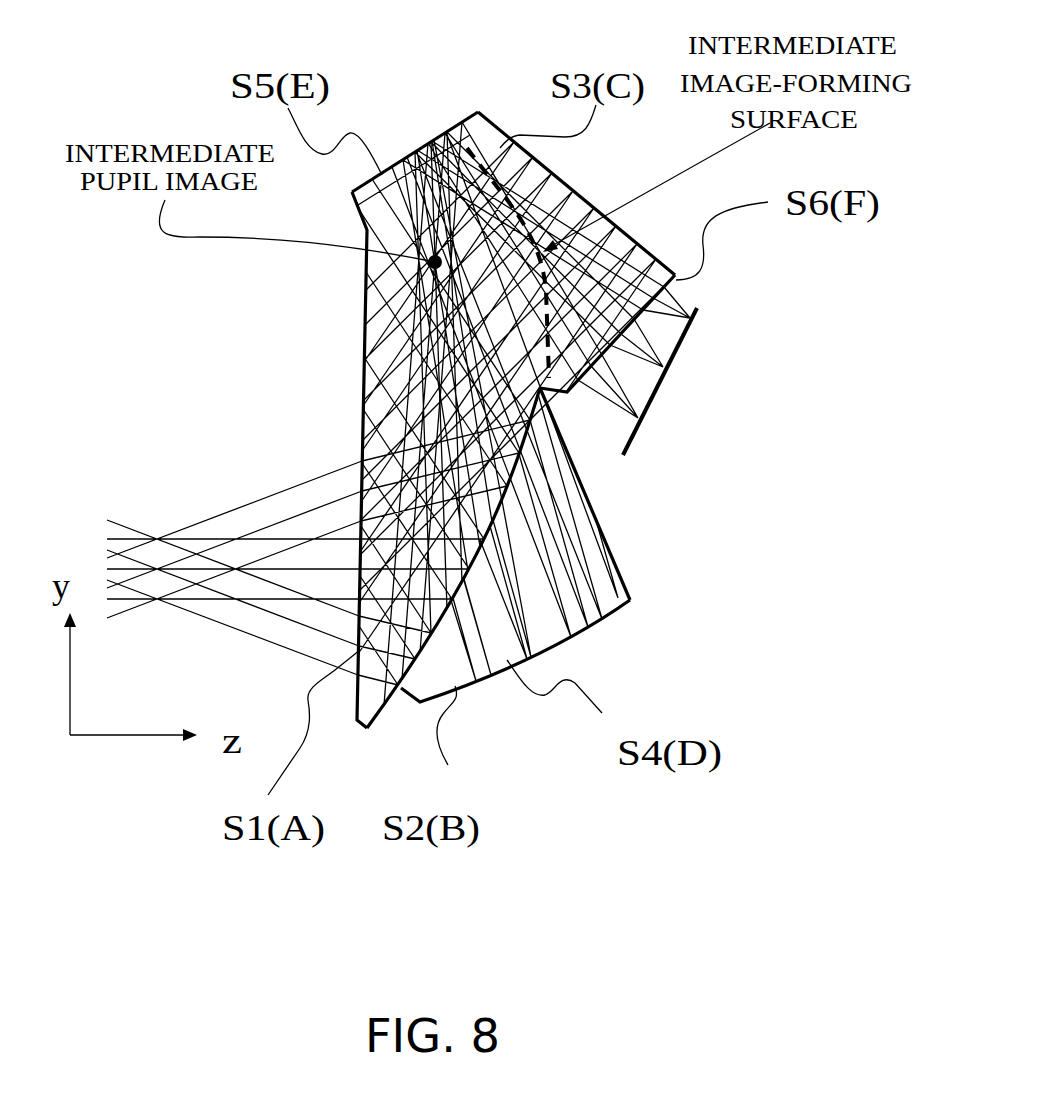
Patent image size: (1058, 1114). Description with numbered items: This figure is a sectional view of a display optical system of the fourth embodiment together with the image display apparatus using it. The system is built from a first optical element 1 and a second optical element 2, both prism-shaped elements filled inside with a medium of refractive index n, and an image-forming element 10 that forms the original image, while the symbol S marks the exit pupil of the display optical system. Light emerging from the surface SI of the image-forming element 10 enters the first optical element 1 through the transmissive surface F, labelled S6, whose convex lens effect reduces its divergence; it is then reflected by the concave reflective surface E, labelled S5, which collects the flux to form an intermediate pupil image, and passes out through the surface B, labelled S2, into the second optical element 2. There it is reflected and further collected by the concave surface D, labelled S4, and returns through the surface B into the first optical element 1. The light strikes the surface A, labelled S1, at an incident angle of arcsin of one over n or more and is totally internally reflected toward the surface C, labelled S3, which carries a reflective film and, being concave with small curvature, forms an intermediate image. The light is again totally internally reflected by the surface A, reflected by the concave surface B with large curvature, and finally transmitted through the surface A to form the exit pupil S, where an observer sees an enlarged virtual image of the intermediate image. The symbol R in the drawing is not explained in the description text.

The first optical element 1 is at (378, 362).
The second optical element 2 is at (580, 535).
The image-forming element 10 is at (655, 403).
The exit pupil S is at (158, 528).
The surface of the image-forming element SI is at (697, 308).
The reference ray R is at (503, 207).
The surface A S1 is at (359, 460).
The surface B S2 is at (453, 558).
The surface C S3 is at (576, 193).
The surface D S4 is at (515, 651).
The reflective surface E S5 is at (415, 152).
The transmissive surface F S6 is at (607, 333).